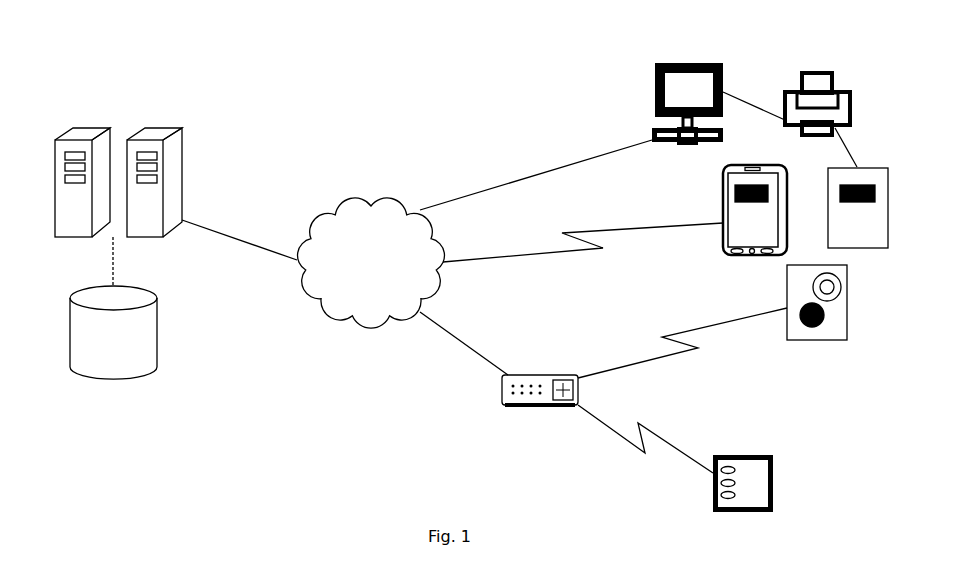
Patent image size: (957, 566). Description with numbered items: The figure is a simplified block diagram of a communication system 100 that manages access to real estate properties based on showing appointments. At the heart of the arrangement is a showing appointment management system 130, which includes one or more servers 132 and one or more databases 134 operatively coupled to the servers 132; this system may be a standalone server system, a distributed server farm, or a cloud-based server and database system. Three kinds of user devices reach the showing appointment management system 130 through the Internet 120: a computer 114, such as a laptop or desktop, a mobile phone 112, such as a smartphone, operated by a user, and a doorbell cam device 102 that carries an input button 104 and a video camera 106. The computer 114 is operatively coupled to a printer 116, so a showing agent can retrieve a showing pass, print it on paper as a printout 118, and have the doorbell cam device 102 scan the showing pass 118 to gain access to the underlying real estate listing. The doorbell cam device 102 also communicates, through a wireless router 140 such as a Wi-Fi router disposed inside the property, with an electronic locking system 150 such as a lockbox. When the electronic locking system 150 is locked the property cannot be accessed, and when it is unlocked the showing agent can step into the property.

The communication system 100 is at (676, 43).
The doorbell cam device 102 is at (845, 334).
The input button 104 is at (824, 318).
The video camera 106 is at (838, 292).
The mobile phone 112 is at (727, 253).
The computer 114 is at (655, 92).
The printer 116 is at (847, 98).
The showing pass 118 is at (858, 248).
The Internet 120 is at (373, 330).
The showing appointment management system 130 is at (91, 250).
The server 132 is at (88, 127).
The database 134 is at (116, 355).
The wireless router 140 is at (518, 408).
The electronic locking system 150 is at (773, 510).